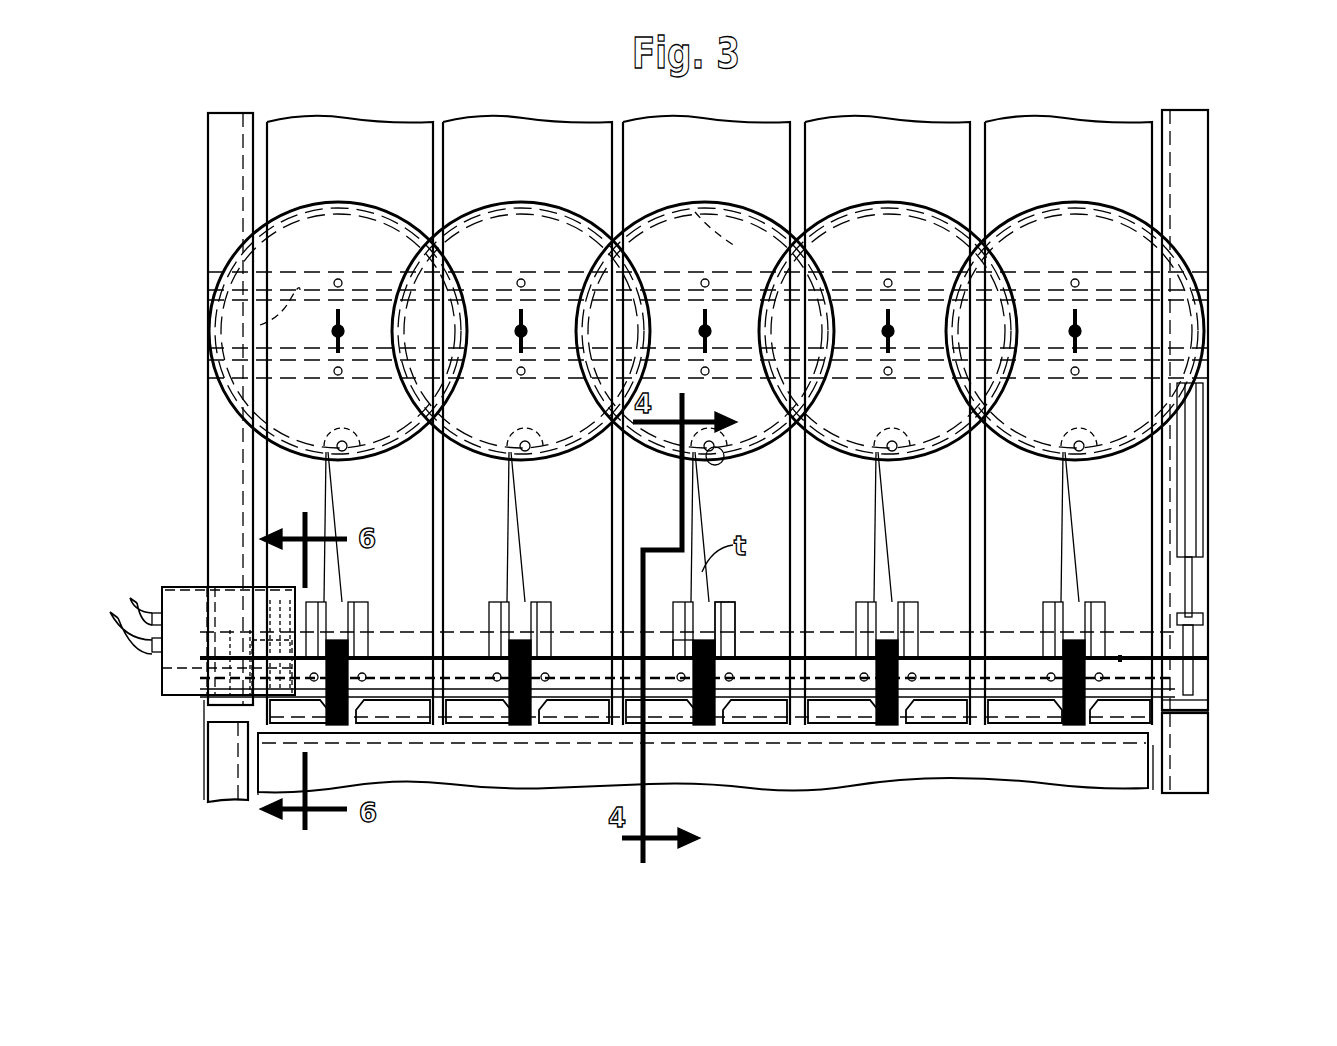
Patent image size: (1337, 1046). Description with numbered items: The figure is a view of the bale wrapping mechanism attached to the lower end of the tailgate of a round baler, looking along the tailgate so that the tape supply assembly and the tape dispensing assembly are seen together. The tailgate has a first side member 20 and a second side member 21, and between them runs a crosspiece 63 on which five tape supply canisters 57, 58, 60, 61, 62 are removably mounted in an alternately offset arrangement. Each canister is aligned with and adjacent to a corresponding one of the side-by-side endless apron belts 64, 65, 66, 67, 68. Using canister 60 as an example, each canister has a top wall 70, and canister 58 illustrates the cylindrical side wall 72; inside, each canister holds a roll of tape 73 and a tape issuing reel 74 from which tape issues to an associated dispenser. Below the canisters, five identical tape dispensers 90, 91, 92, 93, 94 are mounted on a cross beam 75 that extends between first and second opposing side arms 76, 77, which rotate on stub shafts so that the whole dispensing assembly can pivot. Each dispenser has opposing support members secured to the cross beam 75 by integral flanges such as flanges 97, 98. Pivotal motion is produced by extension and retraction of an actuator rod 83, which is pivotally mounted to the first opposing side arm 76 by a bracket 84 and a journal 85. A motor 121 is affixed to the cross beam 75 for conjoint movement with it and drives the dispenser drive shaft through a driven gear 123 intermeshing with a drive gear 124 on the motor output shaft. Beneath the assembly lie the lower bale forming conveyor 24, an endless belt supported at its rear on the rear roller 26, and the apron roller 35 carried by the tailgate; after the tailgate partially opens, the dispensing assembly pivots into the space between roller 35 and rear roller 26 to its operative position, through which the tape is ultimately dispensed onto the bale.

The first side member 20 is at (1200, 198).
The second side member 21 is at (228, 175).
The conveyor 24 is at (965, 782).
The rear roller 26 is at (258, 797).
The roller 35 is at (435, 647).
The tape supply canister 57 is at (1040, 205).
The tape supply canister 58 is at (910, 205).
The tape supply canister 60 is at (728, 208).
The tape supply canister 61 is at (540, 200).
The tape supply canister 62 is at (378, 205).
The crosspiece 63 is at (260, 325).
The belt 64 is at (1072, 135).
The belt 65 is at (880, 145).
The belt 66 is at (700, 142).
The belt 67 is at (540, 138).
The belt 68 is at (337, 122).
The top wall 70 is at (692, 253).
The cylindrical side wall 72 is at (825, 154).
The roll of tape 73 is at (700, 215).
The tape issuing reel 74 is at (720, 470).
The cross beam 75 is at (1120, 660).
The first opposing side arm 76 is at (1208, 697).
The second opposing side arm 77 is at (210, 700).
The actuator rod 83 is at (1195, 580).
The bracket 84 is at (1203, 623).
The journal 85 is at (1208, 650).
The tape dispenser 90 is at (1030, 600).
The tape dispenser 91 is at (912, 600).
The tape dispenser 92 is at (667, 600).
The tape dispenser 93 is at (551, 600).
The tape dispenser 94 is at (355, 600).
The integral flange 97 is at (680, 645).
The integral flange 98 is at (728, 625).
The motor 121 is at (180, 605).
The driven gear 123 is at (255, 655).
The drive gear 124 is at (190, 610).